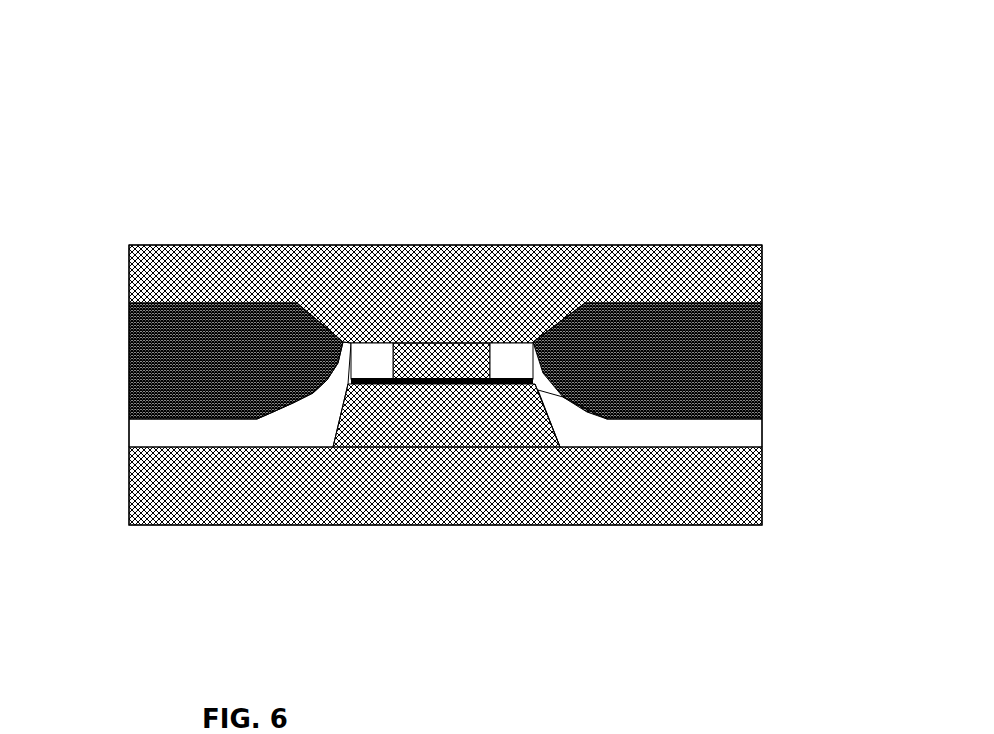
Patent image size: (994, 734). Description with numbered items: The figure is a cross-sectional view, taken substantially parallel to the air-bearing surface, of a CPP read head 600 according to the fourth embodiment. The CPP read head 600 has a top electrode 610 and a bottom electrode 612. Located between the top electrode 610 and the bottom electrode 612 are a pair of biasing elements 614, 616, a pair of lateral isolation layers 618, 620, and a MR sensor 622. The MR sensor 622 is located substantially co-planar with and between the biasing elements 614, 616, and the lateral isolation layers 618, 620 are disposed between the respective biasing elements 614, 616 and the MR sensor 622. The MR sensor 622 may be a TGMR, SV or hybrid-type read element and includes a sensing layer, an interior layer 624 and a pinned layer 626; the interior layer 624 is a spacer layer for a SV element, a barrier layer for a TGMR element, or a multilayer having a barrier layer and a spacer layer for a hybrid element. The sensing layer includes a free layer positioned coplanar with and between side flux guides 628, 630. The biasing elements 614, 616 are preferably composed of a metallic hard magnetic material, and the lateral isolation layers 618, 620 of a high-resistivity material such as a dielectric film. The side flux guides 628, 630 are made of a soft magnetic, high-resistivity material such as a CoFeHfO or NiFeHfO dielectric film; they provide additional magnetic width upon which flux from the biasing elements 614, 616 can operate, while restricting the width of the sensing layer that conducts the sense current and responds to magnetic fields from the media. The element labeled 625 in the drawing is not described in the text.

The CPP read head 600 is at (204, 163).
The top electrode 610 is at (617, 272).
The bottom electrode 612 is at (567, 477).
The biasing element 614 is at (762, 352).
The biasing element 616 is at (160, 358).
The lateral isolation layer 618 is at (703, 438).
The lateral isolation layer 620 is at (302, 420).
The MR sensor 622 is at (565, 428).
The interior layer 624 is at (432, 385).
The dielectric pedestal 625 is at (477, 427).
The pinned layer 626 is at (417, 362).
The side flux guide 628 is at (368, 362).
The side flux guide 630 is at (512, 352).